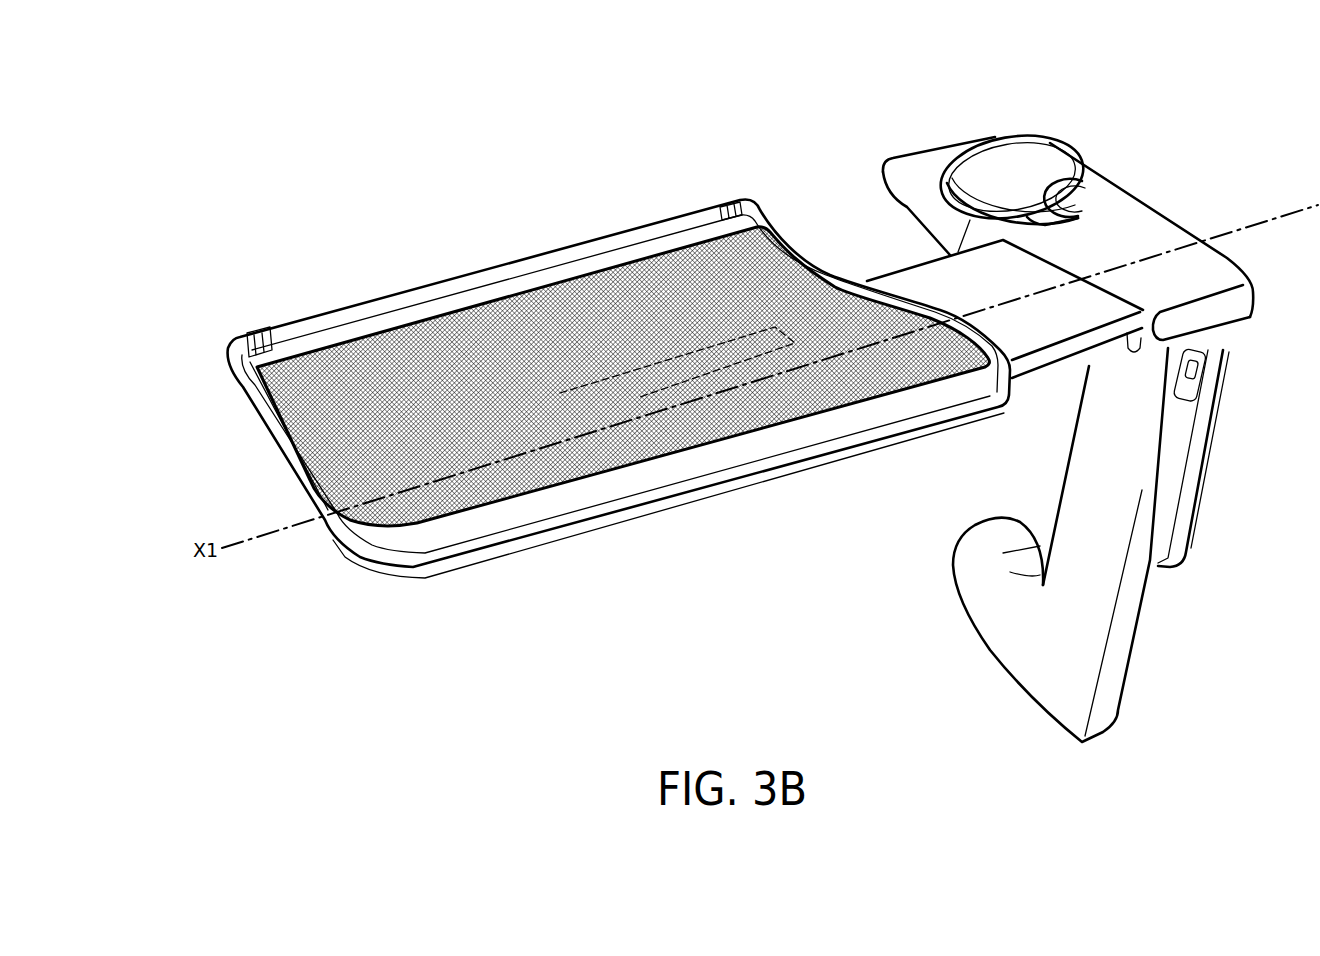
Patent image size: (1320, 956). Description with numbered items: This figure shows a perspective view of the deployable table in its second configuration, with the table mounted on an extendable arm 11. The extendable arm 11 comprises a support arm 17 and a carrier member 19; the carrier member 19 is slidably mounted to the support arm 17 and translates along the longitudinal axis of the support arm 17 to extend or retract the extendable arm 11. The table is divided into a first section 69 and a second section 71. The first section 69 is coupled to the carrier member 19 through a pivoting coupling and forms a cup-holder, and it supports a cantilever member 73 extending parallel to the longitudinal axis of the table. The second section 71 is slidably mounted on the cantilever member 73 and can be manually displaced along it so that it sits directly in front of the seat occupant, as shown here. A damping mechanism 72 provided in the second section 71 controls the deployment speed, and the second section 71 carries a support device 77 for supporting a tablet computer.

The extendable arm 11 is at (728, 398).
The support arm 17 is at (1083, 486).
The carrier member 19 is at (1187, 488).
The first section 69 is at (1137, 230).
The second section 71 is at (333, 373).
The damping mechanism 72 is at (640, 373).
The cantilever member 73 is at (955, 278).
The support device 77 is at (412, 275).